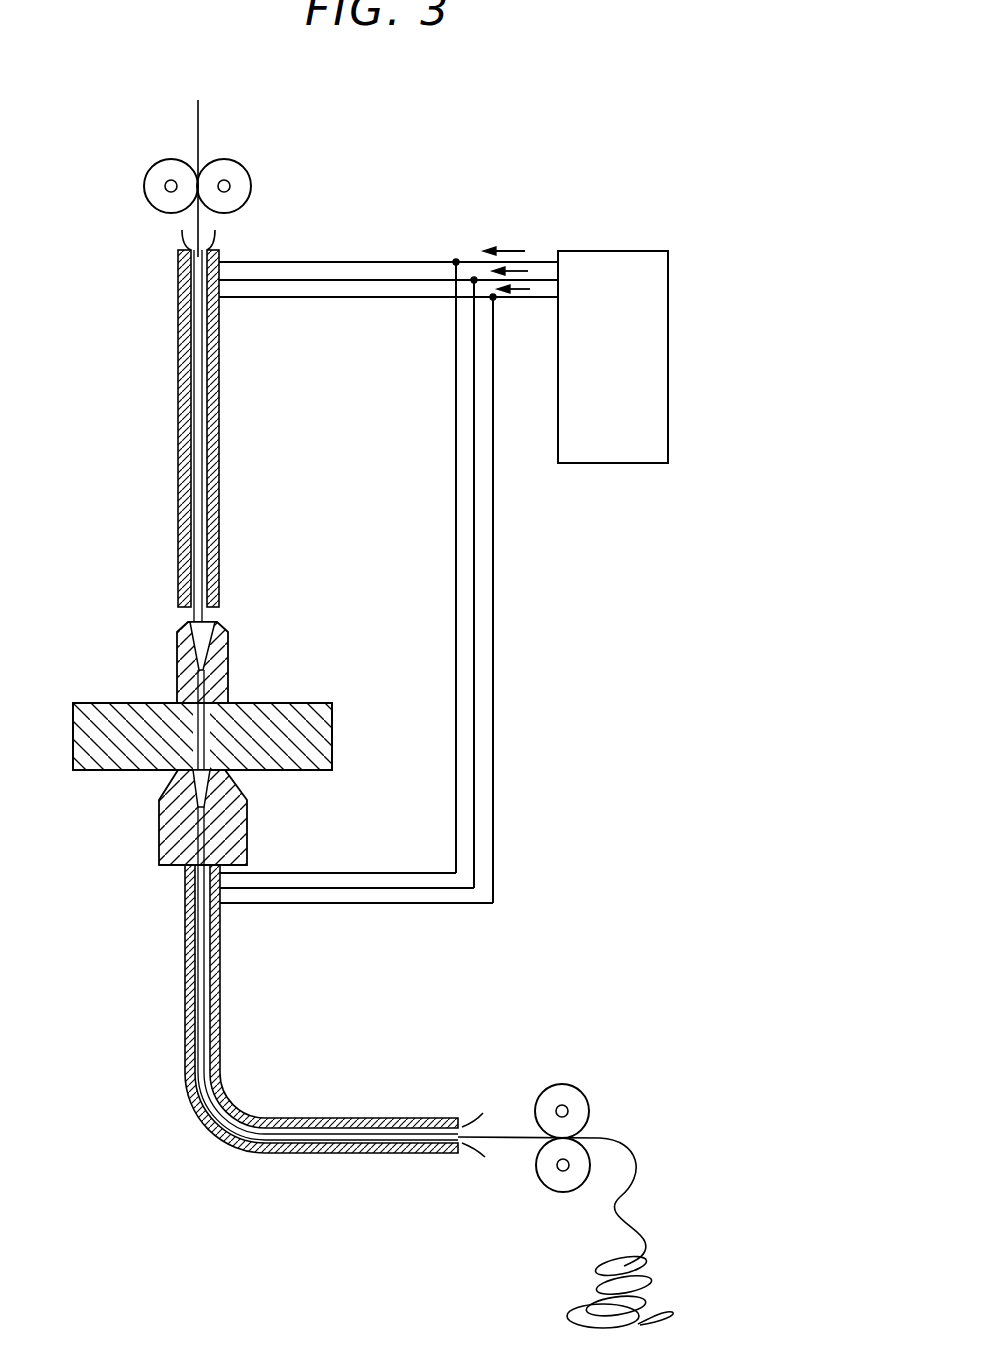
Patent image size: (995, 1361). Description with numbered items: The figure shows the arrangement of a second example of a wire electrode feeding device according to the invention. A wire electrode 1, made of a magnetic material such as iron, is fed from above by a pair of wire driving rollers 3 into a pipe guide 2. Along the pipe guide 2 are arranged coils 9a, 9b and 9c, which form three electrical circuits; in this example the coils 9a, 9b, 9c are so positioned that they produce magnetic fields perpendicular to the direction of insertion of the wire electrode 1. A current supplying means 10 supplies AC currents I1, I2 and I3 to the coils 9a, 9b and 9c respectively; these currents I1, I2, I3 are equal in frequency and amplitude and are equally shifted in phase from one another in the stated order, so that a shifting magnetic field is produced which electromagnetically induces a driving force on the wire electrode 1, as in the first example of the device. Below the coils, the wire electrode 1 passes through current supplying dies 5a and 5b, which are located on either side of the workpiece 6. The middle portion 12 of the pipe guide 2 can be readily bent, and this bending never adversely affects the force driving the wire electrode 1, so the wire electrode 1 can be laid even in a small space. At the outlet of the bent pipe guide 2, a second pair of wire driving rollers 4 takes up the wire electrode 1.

The wire electrode 1 is at (203, 104).
The pipe guide 2 is at (203, 572).
The pair of wire driving rollers 3 is at (155, 162).
The pair of wire driving rollers 4 is at (570, 1090).
The current supplying die 5a is at (228, 650).
The current supplying die 5b is at (247, 820).
The workpiece 6 is at (332, 735).
The coil 9a is at (178, 255).
The coil 9b is at (178, 282).
The coil 9c is at (178, 293).
The current supplying means 10 is at (668, 430).
The middle portion of the pipe guide 12 is at (185, 1087).
The current I1 is at (510, 250).
The current I2 is at (518, 273).
The current I3 is at (522, 288).